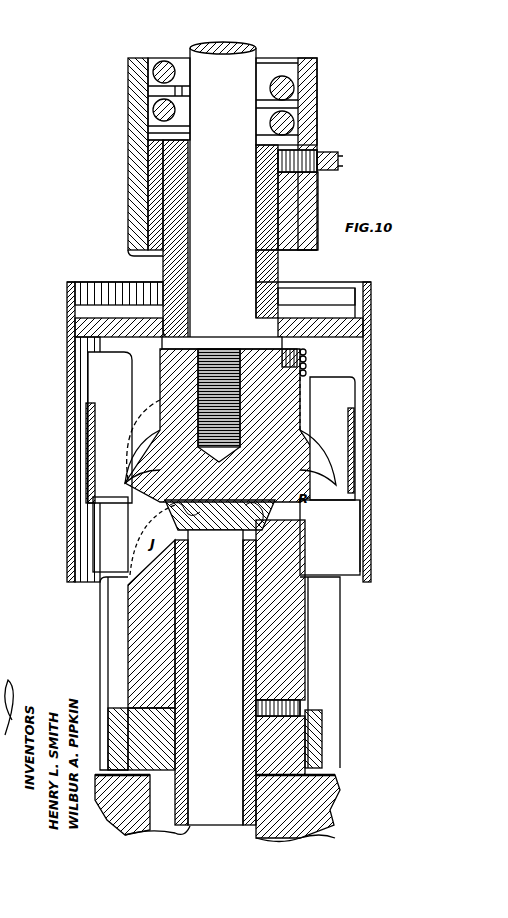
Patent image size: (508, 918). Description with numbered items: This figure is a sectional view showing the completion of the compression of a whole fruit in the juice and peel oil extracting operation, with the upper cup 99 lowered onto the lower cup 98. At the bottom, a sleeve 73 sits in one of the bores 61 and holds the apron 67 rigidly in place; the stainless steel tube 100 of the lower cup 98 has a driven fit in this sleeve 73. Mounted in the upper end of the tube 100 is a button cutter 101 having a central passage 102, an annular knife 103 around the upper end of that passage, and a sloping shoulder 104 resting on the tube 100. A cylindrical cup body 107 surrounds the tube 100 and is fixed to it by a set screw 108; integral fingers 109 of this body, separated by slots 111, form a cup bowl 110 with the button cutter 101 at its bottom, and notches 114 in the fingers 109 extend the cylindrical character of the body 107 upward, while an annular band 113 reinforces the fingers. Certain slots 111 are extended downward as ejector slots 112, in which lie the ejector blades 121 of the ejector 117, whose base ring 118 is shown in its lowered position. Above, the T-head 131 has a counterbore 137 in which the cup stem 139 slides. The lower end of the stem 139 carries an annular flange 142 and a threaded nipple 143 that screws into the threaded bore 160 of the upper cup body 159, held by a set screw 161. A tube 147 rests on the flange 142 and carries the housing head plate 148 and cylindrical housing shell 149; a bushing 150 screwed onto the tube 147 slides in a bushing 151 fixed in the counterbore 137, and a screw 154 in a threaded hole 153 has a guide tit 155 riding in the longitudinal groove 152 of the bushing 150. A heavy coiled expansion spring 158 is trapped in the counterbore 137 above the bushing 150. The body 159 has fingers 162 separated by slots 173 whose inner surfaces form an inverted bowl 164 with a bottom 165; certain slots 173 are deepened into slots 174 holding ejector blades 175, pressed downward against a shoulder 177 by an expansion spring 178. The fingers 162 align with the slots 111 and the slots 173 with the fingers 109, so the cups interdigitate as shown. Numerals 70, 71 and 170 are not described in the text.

The coiled expansion spring 158 is at (158, 72).
The counterbore 137 is at (300, 108).
The T-head 131 is at (320, 121).
The guide tit 155 is at (280, 155).
The threaded hole 153 is at (305, 162).
The screw 154 is at (342, 160).
The cup stem 139 is at (185, 189).
The bushing 151 is at (298, 212).
The tube 147 is at (182, 240).
The bushing 150 is at (163, 266).
The longitudinal groove 152 is at (280, 284).
The housing head plate 148 is at (320, 328).
The annular flange 142 is at (196, 336).
The threaded bore 160 is at (214, 348).
The cylindrical housing shell 149 is at (372, 342).
The expansion spring 178 is at (298, 355).
The set screw 161 is at (308, 368).
The casing 170 is at (146, 374).
The upper cup 99 is at (308, 393).
The threaded nipple 143 is at (210, 397).
The deepened slots 174 is at (165, 421).
The shoulder 177 is at (136, 420).
The cup body 159 is at (288, 408).
The annular band 113 is at (366, 432).
The ejector blades 175 is at (290, 420).
The cup bowl 110 is at (300, 476).
The fingers 109 is at (105, 452).
The slots 173 is at (158, 482).
The notches 114 is at (345, 507).
The bottom 165 is at (110, 534).
The annular knife 103 is at (235, 521).
The fingers 162 is at (330, 556).
The sloping shoulder 104 is at (268, 536).
The slots 111 is at (135, 596).
The ejector blades 121 is at (110, 613).
The lower cup 98 is at (338, 639).
The inverted bowl 164 is at (160, 546).
The central passage 102 is at (206, 582).
The button cutter 101 is at (215, 677).
The stainless steel tube 100 is at (250, 672).
The cylindrical cup body 107 is at (296, 690).
The ejector slots 112 is at (262, 702).
The set screw 108 is at (296, 716).
The base ring 118 is at (322, 740).
The ejector 117 is at (332, 749).
The flange 70 is at (330, 784).
The apron 67 is at (342, 792).
The rim 71 is at (300, 792).
The bores 61 is at (300, 820).
The sleeve 73 is at (280, 830).